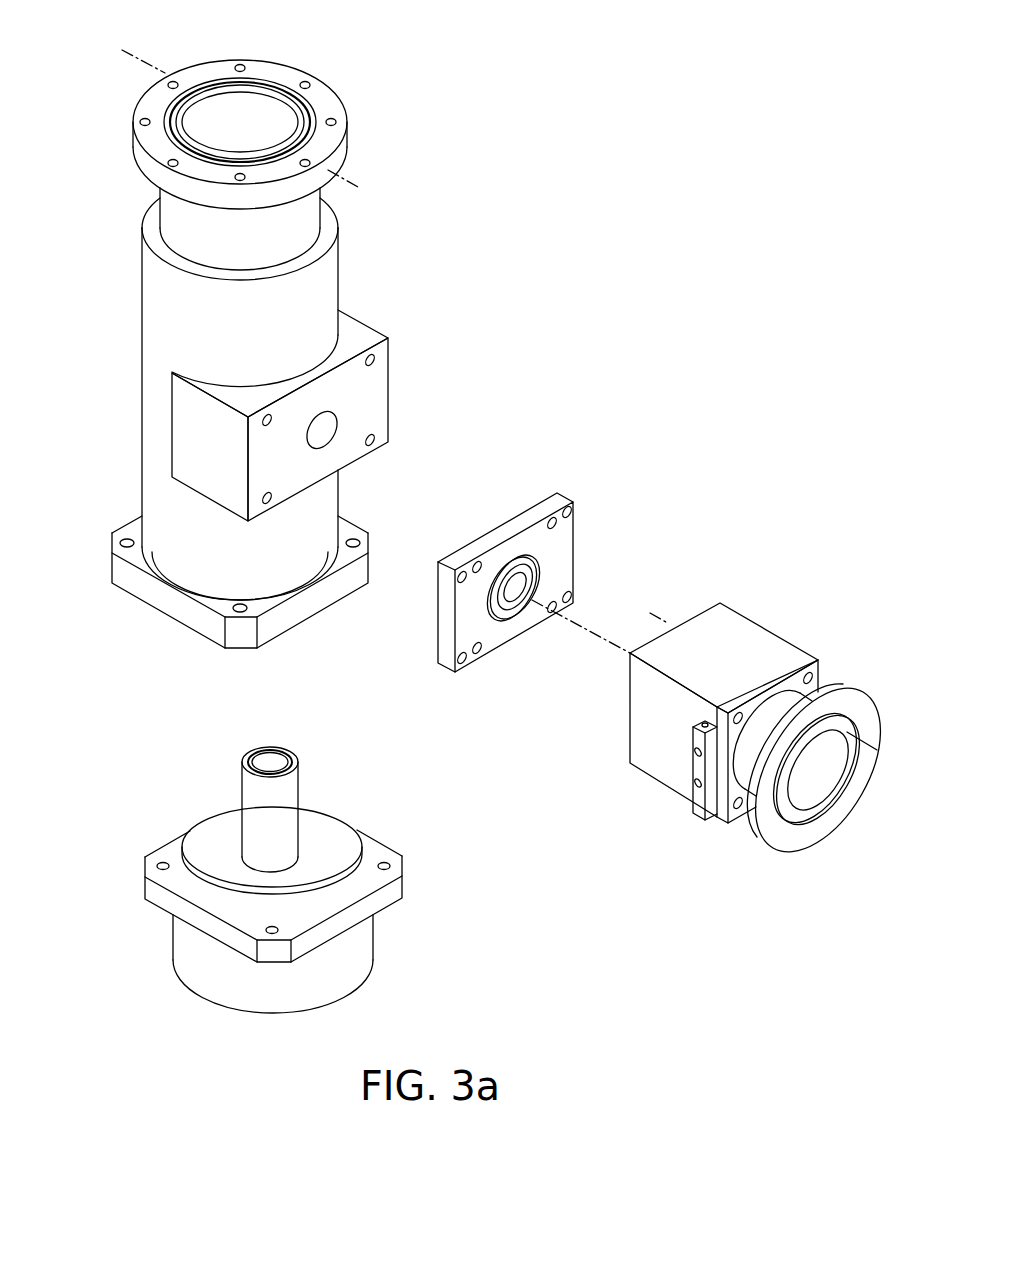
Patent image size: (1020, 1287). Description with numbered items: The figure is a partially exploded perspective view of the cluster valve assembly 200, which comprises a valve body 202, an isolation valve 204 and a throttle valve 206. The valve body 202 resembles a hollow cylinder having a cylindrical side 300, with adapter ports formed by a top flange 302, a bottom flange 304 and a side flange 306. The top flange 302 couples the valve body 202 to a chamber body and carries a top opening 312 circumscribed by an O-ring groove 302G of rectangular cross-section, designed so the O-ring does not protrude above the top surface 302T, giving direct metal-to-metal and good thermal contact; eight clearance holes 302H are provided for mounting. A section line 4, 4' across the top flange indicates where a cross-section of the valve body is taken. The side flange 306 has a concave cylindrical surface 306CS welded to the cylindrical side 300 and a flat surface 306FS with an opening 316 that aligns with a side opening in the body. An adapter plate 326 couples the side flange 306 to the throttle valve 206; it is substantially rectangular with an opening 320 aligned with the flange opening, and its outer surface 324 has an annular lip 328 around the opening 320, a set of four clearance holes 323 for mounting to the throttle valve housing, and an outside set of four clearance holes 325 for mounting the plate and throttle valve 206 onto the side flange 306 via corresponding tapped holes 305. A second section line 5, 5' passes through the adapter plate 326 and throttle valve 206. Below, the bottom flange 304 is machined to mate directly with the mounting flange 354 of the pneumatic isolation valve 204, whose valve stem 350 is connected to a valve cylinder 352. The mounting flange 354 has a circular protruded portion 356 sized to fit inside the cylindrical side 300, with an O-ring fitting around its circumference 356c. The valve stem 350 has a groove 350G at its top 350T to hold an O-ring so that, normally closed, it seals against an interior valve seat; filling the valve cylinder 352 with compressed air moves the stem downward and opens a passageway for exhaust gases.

The cluster valve assembly 200 is at (636, 337).
The valve body 202 is at (463, 290).
The isolation valve 204 is at (138, 967).
The throttle valve 206 is at (785, 618).
The section line 4-4' 4 is at (138, 41).
The section line 4- 4' is at (360, 187).
The section line 5 is at (602, 616).
The section line 5' is at (878, 752).
The cylindrical side 300 is at (147, 303).
The top flange 302 is at (239, 111).
The top surface 302T is at (338, 113).
The clearance holes 302H is at (140, 123).
The O-ring groove 302G is at (315, 110).
The top opening 312 is at (222, 103).
The bottom flange 304 is at (165, 608).
The tapped holes 305 is at (263, 423).
The side flange 306 is at (263, 485).
The concave cylindrical surface 306CS is at (246, 399).
The flat surface 306FS is at (378, 422).
The opening 316 is at (331, 438).
The opening 320 is at (517, 592).
The clearance holes 323 is at (477, 562).
The other surface 324 is at (543, 588).
The clearance holes 325 is at (572, 512).
The adapter plate 326 is at (533, 513).
The annular lip 328 is at (510, 618).
The valve stem 350 is at (286, 793).
The top 350T is at (243, 762).
The groove 350G is at (298, 750).
The valve cylinder 352 is at (333, 990).
The mounting flange 354 is at (157, 858).
The circular protruded portion 356 is at (262, 914).
The circumference 356c is at (237, 910).